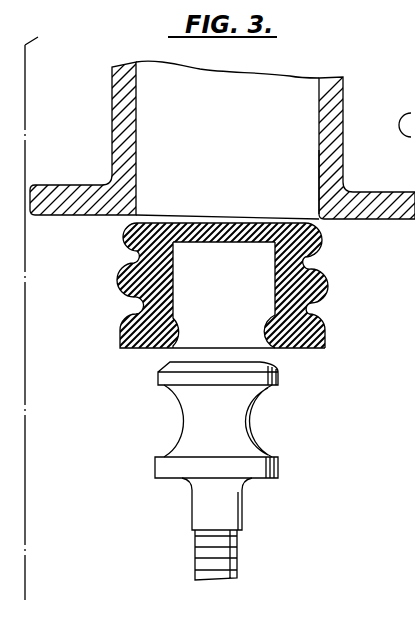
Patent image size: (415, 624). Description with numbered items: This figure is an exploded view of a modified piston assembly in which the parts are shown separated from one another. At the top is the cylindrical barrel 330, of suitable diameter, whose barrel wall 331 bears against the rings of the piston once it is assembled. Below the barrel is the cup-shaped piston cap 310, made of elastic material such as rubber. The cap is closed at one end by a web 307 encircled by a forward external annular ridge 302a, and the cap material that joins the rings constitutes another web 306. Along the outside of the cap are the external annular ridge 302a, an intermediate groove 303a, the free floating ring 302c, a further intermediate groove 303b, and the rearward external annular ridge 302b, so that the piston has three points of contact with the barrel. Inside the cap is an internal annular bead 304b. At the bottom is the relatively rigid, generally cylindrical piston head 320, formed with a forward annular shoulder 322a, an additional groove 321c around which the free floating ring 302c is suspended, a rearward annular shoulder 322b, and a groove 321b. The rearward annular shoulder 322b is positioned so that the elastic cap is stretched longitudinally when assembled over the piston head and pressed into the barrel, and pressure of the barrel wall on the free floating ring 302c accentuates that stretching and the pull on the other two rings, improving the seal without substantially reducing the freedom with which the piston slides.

The cylindrical barrel 330 is at (319, 142).
The barrel wall 331 is at (319, 210).
The web 307 is at (237, 220).
The web 306 is at (209, 242).
The piston cap 310 is at (243, 301).
The external annular ridge 302a is at (322, 246).
The intermediate groove 303a is at (304, 262).
The free floating ring 302c is at (328, 287).
The intermediate groove 303b is at (305, 309).
The external annular ridge 302b is at (325, 330).
The internal annular bead 304b is at (273, 348).
The piston head 320 is at (238, 417).
The annular shoulder 322a is at (280, 386).
The groove 321c is at (250, 420).
The annular shoulder 322b is at (278, 477).
The groove 321b is at (243, 495).